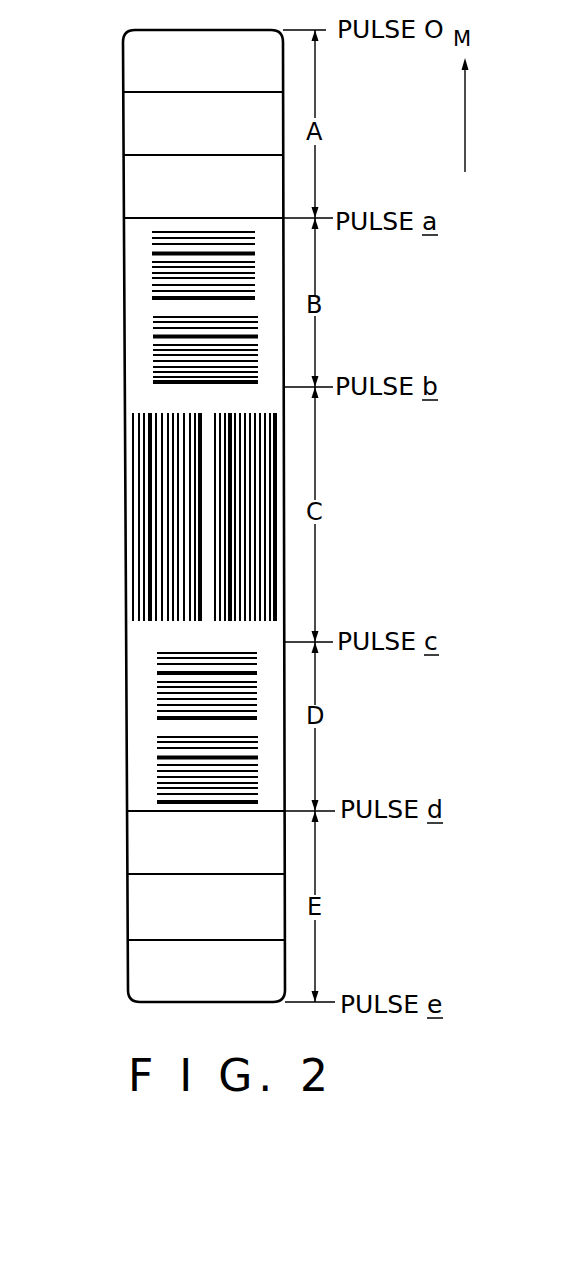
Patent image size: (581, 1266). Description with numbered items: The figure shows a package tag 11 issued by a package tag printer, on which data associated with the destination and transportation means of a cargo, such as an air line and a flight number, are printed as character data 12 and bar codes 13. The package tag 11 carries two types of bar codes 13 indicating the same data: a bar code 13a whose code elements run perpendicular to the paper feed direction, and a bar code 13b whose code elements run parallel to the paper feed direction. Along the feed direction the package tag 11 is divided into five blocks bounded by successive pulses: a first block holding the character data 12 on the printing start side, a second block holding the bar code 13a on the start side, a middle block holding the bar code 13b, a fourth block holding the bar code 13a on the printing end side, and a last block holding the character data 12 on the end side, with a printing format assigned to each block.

The package tag 11 is at (125, 400).
The character data 12 is at (116, 35).
The bar codes 13 is at (139, 517).
The bar code 13a is at (145, 308).
The bar code 13b is at (167, 517).